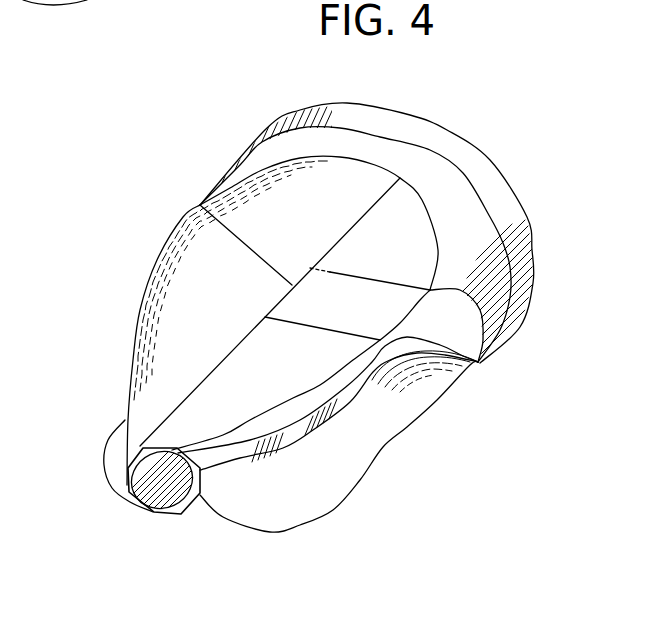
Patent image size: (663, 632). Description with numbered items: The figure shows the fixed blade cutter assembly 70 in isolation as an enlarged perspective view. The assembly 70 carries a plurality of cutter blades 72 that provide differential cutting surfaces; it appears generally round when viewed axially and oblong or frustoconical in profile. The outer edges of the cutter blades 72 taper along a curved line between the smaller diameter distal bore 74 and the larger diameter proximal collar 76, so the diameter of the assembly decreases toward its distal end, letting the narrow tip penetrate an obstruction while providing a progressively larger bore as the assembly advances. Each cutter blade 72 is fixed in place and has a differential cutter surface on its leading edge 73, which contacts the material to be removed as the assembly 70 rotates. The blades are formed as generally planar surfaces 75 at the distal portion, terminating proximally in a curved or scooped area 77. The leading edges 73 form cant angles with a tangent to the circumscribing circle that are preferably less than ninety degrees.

The fixed blade cutter assembly 70 is at (146, 222).
The cutter blade 72 is at (168, 303).
The leading edge 73 is at (137, 343).
The distal bore 74 is at (152, 477).
The generally planar surface 75 is at (230, 317).
The proximal collar 76 is at (423, 132).
The curved or scooped area 77 is at (286, 230).